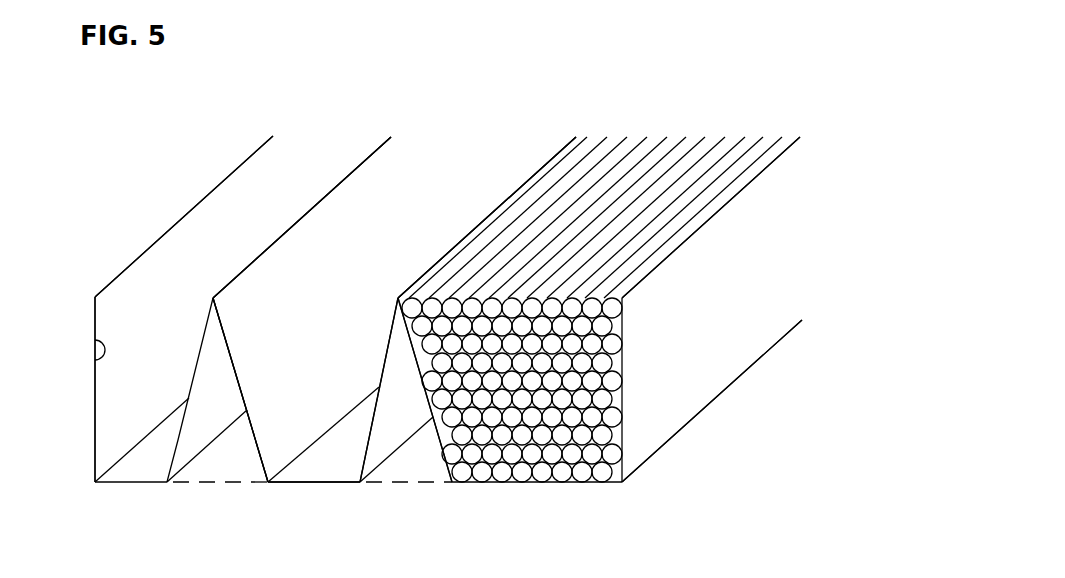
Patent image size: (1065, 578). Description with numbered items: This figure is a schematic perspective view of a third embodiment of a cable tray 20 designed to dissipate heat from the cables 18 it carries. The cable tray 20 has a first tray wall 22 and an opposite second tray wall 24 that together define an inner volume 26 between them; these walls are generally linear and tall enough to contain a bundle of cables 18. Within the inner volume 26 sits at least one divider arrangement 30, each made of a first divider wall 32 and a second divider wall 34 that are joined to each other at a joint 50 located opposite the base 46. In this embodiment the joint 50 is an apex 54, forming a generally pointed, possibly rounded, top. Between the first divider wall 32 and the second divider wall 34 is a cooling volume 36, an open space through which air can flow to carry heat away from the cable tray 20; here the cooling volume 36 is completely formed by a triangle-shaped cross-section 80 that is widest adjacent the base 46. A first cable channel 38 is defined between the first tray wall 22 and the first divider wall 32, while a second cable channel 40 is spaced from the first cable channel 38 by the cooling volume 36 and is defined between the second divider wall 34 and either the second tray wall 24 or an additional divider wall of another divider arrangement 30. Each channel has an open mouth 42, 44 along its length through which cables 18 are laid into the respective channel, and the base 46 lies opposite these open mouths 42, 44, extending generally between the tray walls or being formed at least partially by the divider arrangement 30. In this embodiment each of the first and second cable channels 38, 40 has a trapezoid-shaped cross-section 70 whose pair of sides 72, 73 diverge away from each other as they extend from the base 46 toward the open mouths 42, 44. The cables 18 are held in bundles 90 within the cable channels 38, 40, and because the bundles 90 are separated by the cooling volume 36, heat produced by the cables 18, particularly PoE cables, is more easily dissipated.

The cables 18 is at (573, 252).
The cable tray 20 is at (858, 146).
The first tray wall 22 is at (95, 432).
The second tray wall 24 is at (712, 352).
The inner volume 26 is at (134, 278).
The divider arrangement 30 is at (233, 282).
The first divider wall 32 is at (188, 399).
The second divider wall 34 is at (232, 356).
The cooling volume 36 is at (228, 458).
The first cable channel 38 is at (97, 358).
The second cable channel 40 is at (332, 213).
The open mouth 42 is at (225, 202).
The open mouth 44 is at (523, 183).
The base 46 is at (330, 487).
The joint 50 is at (267, 248).
The apex 54 is at (290, 230).
The trapezoid-shaped cross-section 70 is at (420, 188).
The side 72 is at (240, 383).
The side 73 is at (380, 381).
The triangle-shaped cross-section 80 is at (178, 442).
The bundles 90 is at (548, 483).